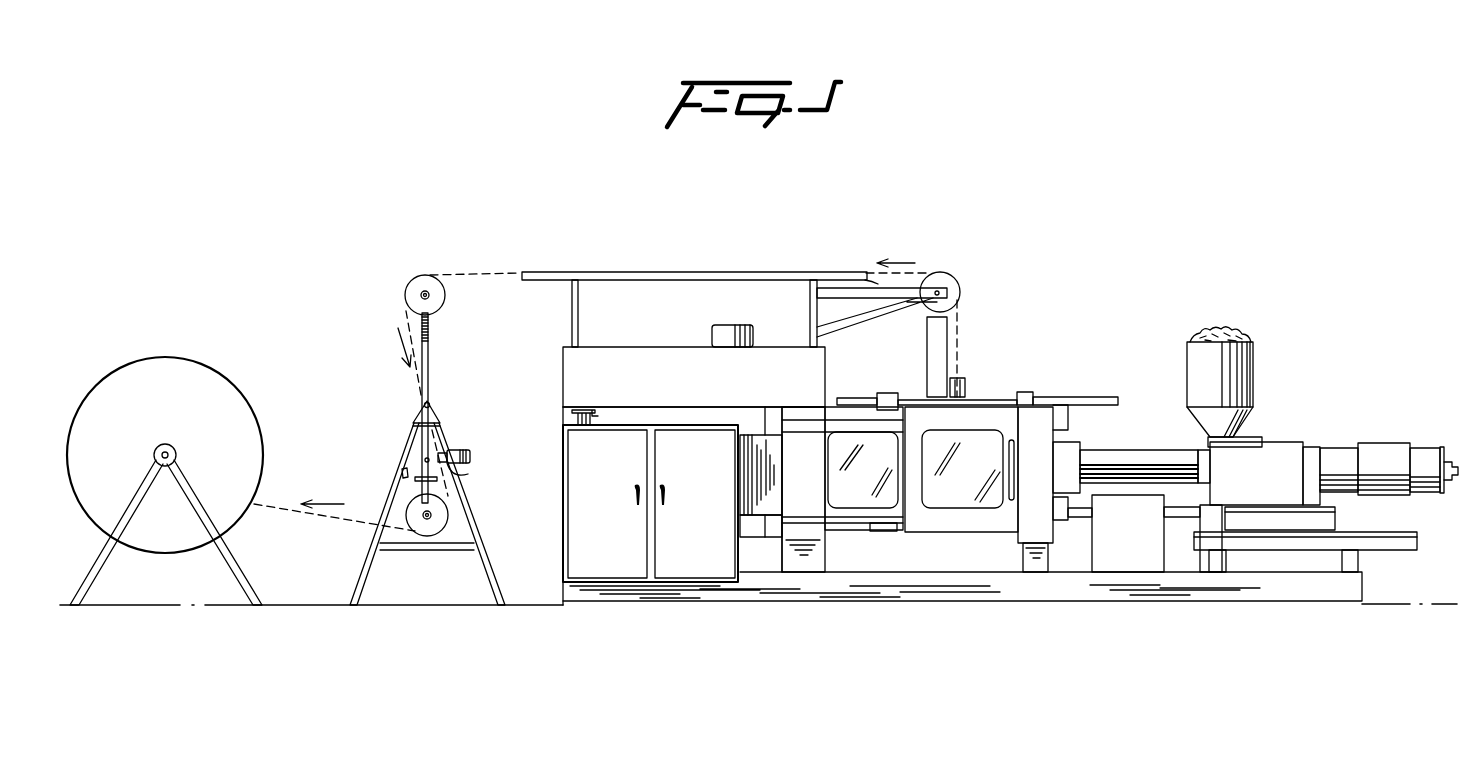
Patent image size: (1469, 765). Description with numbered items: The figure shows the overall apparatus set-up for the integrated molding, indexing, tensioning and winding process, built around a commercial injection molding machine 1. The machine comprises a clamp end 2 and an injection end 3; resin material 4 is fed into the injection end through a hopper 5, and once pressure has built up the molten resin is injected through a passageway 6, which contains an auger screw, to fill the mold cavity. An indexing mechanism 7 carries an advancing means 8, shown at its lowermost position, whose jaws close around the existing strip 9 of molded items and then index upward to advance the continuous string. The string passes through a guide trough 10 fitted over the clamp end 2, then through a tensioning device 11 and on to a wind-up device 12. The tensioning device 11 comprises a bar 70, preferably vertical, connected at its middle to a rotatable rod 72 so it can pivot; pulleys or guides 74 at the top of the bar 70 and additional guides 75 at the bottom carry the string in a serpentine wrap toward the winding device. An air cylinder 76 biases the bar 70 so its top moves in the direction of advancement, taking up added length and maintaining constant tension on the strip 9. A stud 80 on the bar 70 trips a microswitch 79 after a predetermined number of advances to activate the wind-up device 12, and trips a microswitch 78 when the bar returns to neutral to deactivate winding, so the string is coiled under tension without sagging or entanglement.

The injection molding machine 1 is at (1109, 325).
The clamp end 2 is at (857, 585).
The injection end 3 is at (1242, 598).
The resin material 4 is at (1235, 330).
The hopper 5 is at (1247, 381).
The passageway 6 is at (1118, 455).
The indexing mechanism 7 is at (927, 348).
The advancing means 8 is at (967, 383).
The strip 9 is at (458, 271).
The guide trough 10 is at (652, 273).
The tensioning device 11 is at (401, 423).
The wind-up device 12 is at (165, 554).
The bar 70 is at (432, 352).
The rotatable rod 72 is at (432, 402).
The pulleys or guides 74 is at (411, 293).
The guides 75 is at (435, 527).
The air cylinder 76 is at (457, 447).
The microswitch 78 is at (408, 477).
The microswitch 79 is at (458, 470).
The stud 80 is at (435, 479).